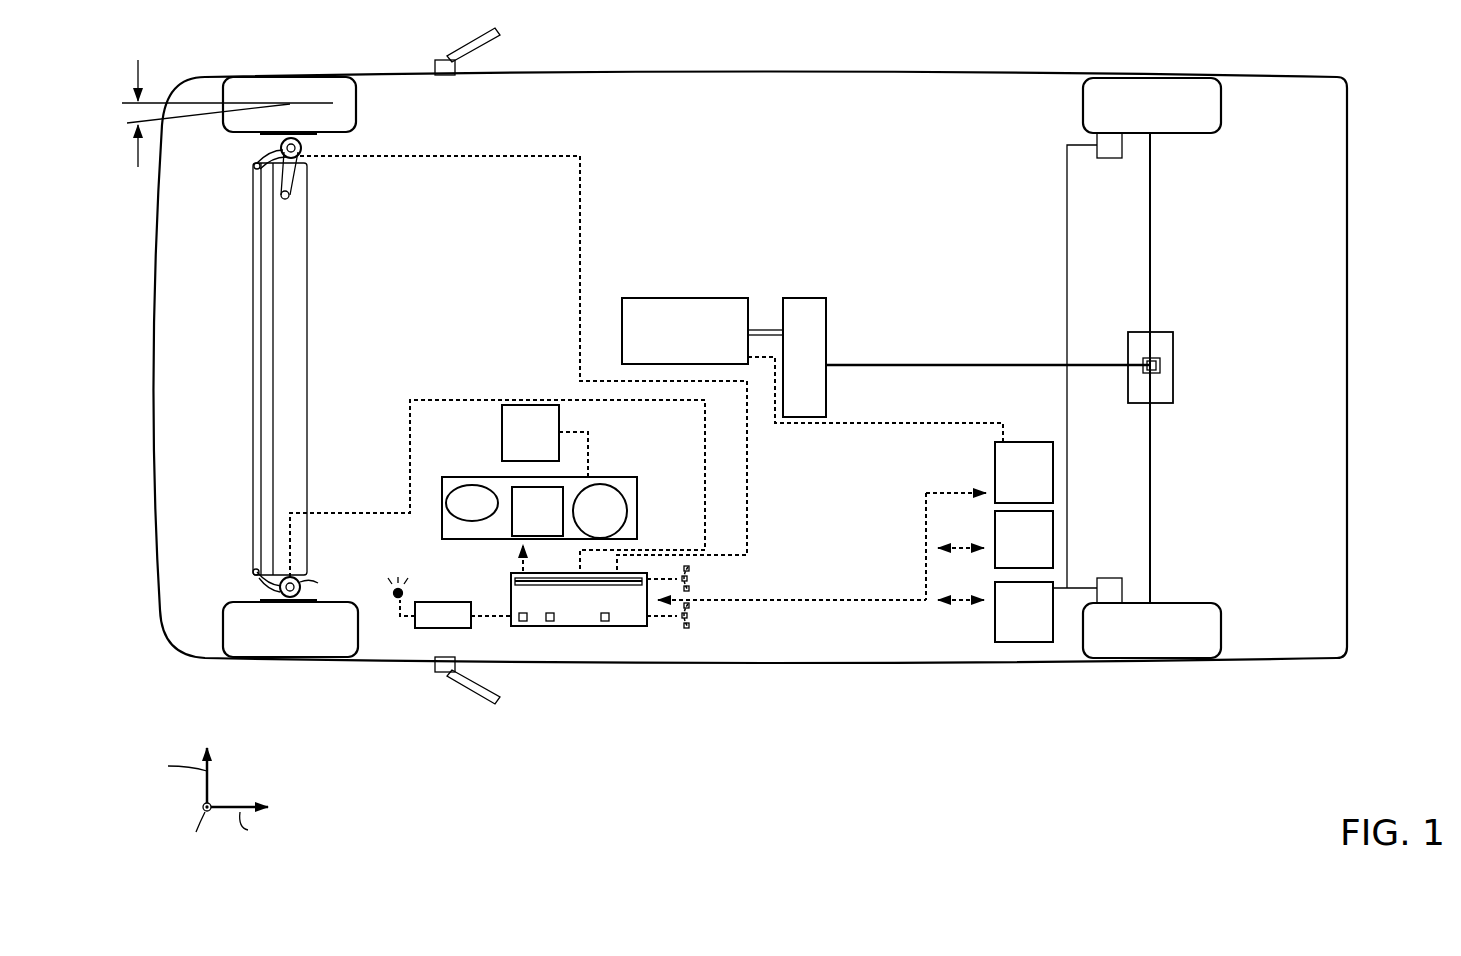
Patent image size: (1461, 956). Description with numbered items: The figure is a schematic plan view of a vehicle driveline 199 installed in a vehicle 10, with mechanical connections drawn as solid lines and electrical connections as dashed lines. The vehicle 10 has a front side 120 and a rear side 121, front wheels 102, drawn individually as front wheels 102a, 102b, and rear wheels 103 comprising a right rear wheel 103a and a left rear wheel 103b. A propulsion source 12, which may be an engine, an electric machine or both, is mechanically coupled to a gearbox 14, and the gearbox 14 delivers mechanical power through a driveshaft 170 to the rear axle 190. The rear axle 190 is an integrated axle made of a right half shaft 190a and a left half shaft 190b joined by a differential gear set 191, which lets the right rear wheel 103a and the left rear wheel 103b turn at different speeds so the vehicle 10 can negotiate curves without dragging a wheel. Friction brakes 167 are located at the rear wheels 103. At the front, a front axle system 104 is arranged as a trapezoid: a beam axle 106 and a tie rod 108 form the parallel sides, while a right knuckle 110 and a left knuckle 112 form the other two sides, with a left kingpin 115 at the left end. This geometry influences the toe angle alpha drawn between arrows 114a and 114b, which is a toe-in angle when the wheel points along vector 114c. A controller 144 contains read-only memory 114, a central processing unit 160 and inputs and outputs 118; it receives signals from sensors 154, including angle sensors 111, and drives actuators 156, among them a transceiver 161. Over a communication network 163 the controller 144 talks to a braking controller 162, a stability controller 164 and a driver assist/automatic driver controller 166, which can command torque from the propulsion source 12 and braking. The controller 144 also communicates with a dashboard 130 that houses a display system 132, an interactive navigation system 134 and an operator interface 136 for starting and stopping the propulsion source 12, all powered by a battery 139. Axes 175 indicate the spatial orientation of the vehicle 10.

The vehicle 10 is at (975, 77).
The propulsion source 12 is at (702, 331).
The gearbox 14 is at (804, 357).
The front wheels 102 is at (240, 150).
The front left wheel 102a is at (360, 100).
The front right wheel 102b is at (255, 658).
The rear wheels 103 is at (1225, 150).
The right rear wheel 103a is at (1150, 77).
The left rear wheel 103b is at (1150, 658).
The front axle system 104 is at (348, 382).
The beam axle 106 is at (305, 255).
The tie rod 108 is at (258, 322).
The right knuckle 110 is at (303, 162).
The angle sensors 111 is at (288, 168).
The left knuckle 112 is at (303, 585).
The read-only memory 114 is at (523, 622).
The arrow 114a is at (138, 80).
The arrow 114b is at (138, 155).
The vector 114c is at (181, 117).
The left kingpin 115 is at (278, 590).
The inputs and outputs 118 is at (628, 585).
The front side 120 is at (114, 249).
The rear side 121 is at (1391, 111).
The dashboard 130 is at (637, 477).
The display system 132 is at (472, 503).
The interactive navigation system 134 is at (537, 511).
The operator interface 136 is at (600, 511).
The battery 139 is at (530, 433).
The controller 144 is at (579, 585).
The sensors 154 is at (690, 579).
The actuators 156 is at (690, 617).
The central processing unit 160 is at (605, 622).
The transceiver 161 is at (449, 603).
The braking controller 162 is at (995, 612).
The communication network 163 is at (792, 621).
The stability controller 164 is at (995, 539).
The driver assist/automatic driver controller 166 is at (989, 472).
The friction brakes 167 is at (1107, 160).
The driveshaft 170 is at (1007, 365).
The axes 175 is at (236, 757).
The rear axle 190 is at (1184, 416).
The right half shaft 190a is at (1158, 270).
The left half shaft 190b is at (1148, 482).
The differential gear set 191 is at (1160, 365).
The vehicle driveline 199 is at (804, 211).